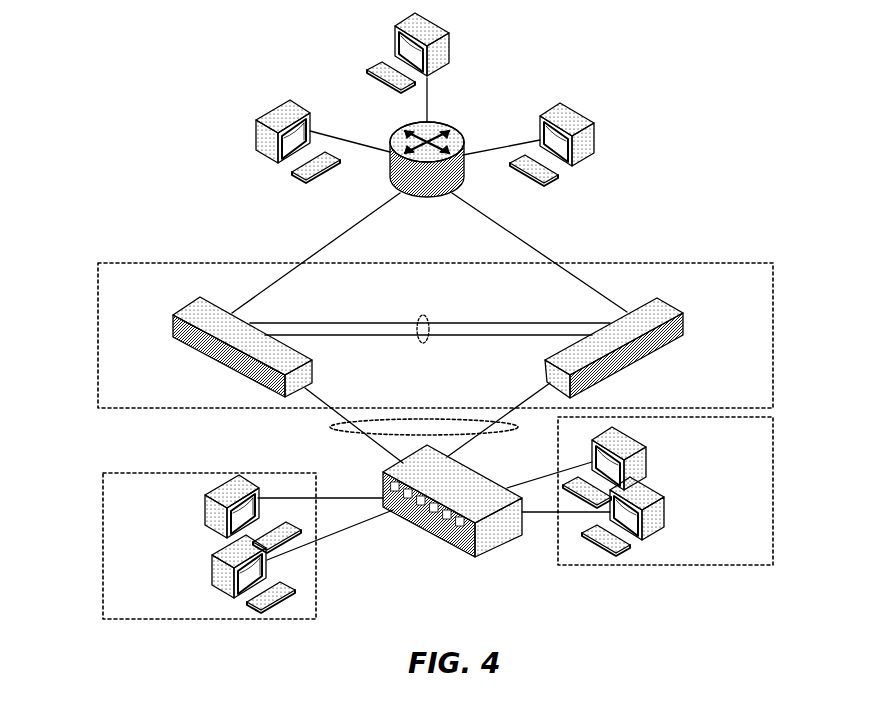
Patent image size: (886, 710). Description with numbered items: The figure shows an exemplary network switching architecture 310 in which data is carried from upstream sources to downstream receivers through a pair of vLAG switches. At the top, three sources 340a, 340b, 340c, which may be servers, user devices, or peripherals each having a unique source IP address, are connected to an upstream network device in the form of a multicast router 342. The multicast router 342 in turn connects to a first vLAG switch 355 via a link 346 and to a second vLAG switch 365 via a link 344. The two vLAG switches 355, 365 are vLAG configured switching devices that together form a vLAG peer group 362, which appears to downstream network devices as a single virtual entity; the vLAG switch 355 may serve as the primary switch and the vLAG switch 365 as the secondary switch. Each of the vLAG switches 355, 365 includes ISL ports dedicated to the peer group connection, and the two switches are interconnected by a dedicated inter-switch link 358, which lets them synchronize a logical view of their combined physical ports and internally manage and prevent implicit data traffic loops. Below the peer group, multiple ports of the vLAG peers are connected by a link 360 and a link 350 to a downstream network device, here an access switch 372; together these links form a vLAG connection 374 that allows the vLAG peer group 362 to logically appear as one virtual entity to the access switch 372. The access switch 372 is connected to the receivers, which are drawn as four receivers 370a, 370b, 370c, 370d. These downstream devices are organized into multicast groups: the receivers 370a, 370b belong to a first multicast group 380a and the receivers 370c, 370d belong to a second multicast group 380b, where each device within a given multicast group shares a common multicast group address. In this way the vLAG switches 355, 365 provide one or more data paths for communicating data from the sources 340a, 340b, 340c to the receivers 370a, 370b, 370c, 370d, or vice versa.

The network switching architecture 310 is at (53, 190).
The source 340a is at (258, 117).
The source 340b is at (450, 43).
The source 340c is at (595, 118).
The multicast router 342 is at (444, 196).
The link 344 is at (512, 228).
The link 346 is at (326, 245).
The vLAG switch 355 is at (173, 316).
The inter-switch link (ISL) 358 is at (425, 316).
The vLAG peer group 362 is at (205, 397).
The vLAG switch 365 is at (683, 311).
The link 350 is at (478, 440).
The link 360 is at (426, 518).
The access switch 372 is at (473, 558).
The vLAG connection 374 is at (330, 429).
The receiver 370a is at (665, 490).
The receiver 370b is at (647, 455).
The receiver 370c is at (213, 553).
The receiver 370d is at (206, 502).
The multicast group 380a is at (767, 558).
The multicast group 380b is at (212, 613).